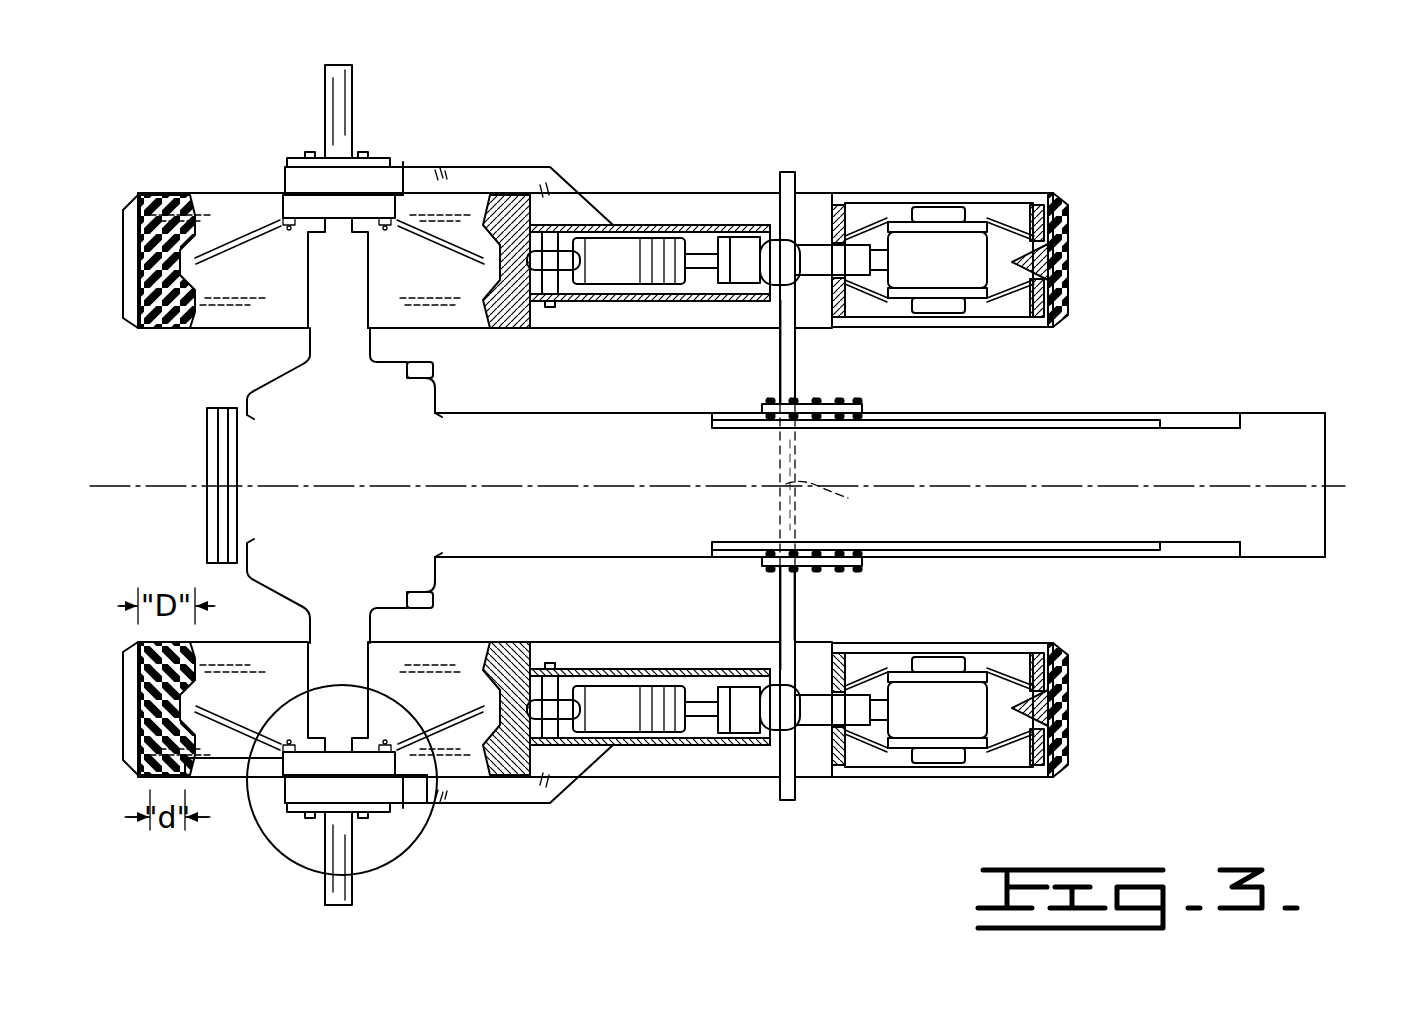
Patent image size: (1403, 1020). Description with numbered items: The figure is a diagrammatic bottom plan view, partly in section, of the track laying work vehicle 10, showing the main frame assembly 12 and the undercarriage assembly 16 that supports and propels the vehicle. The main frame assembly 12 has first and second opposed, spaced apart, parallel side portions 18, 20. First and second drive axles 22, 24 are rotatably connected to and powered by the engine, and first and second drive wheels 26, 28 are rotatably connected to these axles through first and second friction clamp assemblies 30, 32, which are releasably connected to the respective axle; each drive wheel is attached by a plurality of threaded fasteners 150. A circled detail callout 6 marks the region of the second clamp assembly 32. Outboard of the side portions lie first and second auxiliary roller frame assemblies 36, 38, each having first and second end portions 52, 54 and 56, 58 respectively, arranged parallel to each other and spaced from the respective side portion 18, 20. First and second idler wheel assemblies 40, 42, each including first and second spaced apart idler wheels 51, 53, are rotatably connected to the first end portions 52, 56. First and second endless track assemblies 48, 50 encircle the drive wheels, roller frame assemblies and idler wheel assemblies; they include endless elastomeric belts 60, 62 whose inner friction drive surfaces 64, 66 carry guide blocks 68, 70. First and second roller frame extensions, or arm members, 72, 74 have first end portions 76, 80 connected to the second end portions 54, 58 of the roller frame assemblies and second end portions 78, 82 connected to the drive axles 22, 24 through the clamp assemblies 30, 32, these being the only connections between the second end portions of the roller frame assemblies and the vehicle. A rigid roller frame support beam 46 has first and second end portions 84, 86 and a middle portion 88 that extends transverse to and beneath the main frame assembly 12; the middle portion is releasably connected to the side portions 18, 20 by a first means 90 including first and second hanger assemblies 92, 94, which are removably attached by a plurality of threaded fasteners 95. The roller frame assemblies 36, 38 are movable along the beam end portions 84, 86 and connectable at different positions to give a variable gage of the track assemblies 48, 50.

The detail view circle 6 is at (440, 812).
The track laying work vehicle 10 is at (1158, 343).
The main frame assembly 12 is at (1202, 545).
The undercarriage assembly 16 is at (812, 160).
The first side portion 18 is at (1055, 417).
The second side portion 20 is at (1097, 552).
The first drive axle 22 is at (347, 80).
The second drive axle 24 is at (327, 900).
The first drive wheel 26 is at (264, 236).
The second drive wheel 28 is at (268, 735).
The first friction clamp assembly 30 is at (405, 162).
The second friction clamp assembly 32 is at (295, 815).
The first auxiliary roller frame assembly 36 is at (660, 300).
The second auxiliary roller frame assembly 38 is at (641, 672).
The first idler wheel assembly 40 is at (1010, 290).
The second idler wheel assembly 42 is at (1012, 662).
The rigid roller frame support beam 46 is at (803, 622).
The first endless track assembly 48 is at (1072, 213).
The second endless track assembly 50 is at (1075, 745).
The first idler wheel 51 is at (858, 300).
The first end portion of first roller frame assembly 52 is at (840, 195).
The second idler wheel 53 is at (876, 212).
The second end portion of first roller frame assembly 54 is at (618, 226).
The first end portion of second roller frame assembly 56 is at (803, 772).
The second end portion of second roller frame assembly 58 is at (632, 747).
The first endless elastomeric belt 60 is at (1065, 305).
The second endless elastomeric belt 62 is at (1063, 675).
The inner friction drive surface 64 is at (1038, 200).
The inner friction drive surface 66 is at (1030, 770).
The guide blocks 68 is at (1078, 262).
The guide blocks 70 is at (1060, 705).
The first roller frame extension 72 is at (527, 167).
The second roller frame extension 74 is at (540, 806).
The first end portion of first roller frame extension 76 is at (578, 210).
The second end portion of first roller frame extension 78 is at (436, 168).
The first end portion of second roller frame extension 80 is at (617, 795).
The second end portion of second roller frame extension 82 is at (427, 800).
The first end portion of support beam 84 is at (780, 315).
The second end portion of support beam 86 is at (790, 665).
The middle portion of support beam 88 is at (848, 498).
The first means 90 is at (880, 405).
The first hanger assembly 92 is at (765, 401).
The second hanger assembly 94 is at (768, 570).
The threaded fasteners 95 is at (833, 424).
The threaded fasteners 150 is at (292, 228).